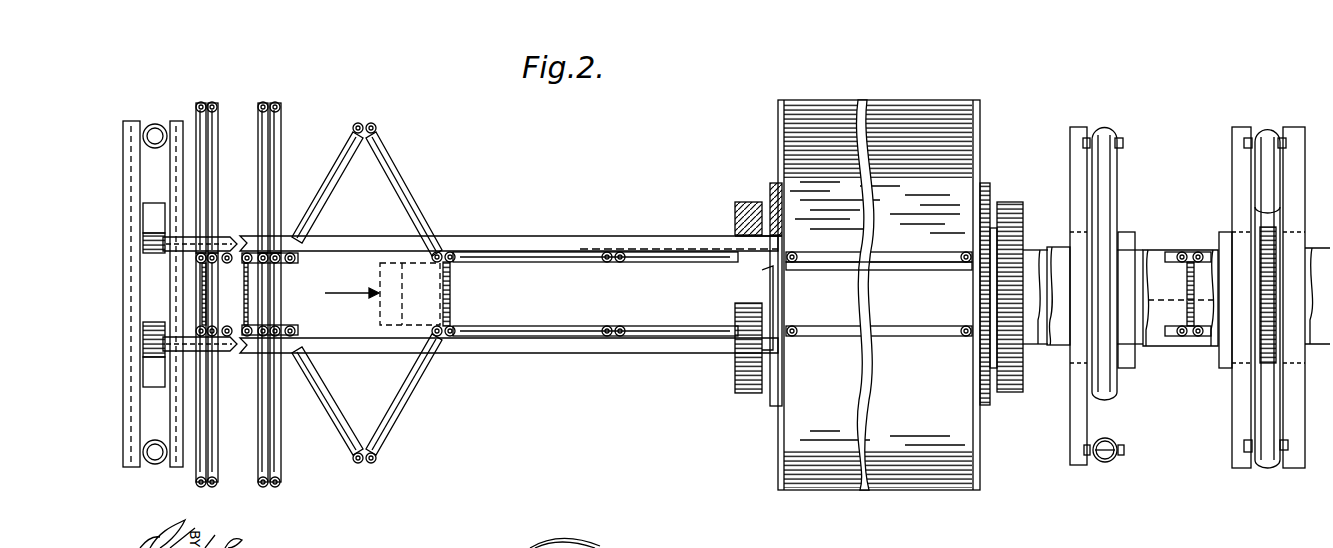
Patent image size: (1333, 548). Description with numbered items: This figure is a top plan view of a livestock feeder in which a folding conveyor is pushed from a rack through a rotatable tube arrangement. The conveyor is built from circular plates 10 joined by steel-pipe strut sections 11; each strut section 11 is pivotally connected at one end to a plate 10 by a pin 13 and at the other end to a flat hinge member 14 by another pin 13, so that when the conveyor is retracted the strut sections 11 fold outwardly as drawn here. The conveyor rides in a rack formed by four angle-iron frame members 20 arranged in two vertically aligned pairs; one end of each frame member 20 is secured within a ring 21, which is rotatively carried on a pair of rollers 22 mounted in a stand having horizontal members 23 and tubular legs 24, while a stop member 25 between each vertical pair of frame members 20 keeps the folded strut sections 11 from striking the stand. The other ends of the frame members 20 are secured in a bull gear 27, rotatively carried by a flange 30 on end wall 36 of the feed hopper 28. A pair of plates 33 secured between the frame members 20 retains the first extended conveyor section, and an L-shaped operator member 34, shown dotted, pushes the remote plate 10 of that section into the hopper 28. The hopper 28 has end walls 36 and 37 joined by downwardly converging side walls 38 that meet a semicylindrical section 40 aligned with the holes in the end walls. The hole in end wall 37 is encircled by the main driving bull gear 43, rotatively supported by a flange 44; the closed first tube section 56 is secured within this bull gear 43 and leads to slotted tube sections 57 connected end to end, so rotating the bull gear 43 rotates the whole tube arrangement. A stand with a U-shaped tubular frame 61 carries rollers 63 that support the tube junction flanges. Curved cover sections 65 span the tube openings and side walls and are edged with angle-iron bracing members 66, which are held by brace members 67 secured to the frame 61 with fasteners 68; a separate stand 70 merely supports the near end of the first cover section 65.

The circular plate 10 is at (451, 293).
The strut section 11 is at (197, 116).
The pin 13 is at (200, 102).
The hinge member 14 is at (263, 103).
The frame member 20 is at (508, 236).
The ring 21 is at (170, 222).
The roller 22 is at (155, 203).
The horizontal member 23 is at (131, 468).
The leg 24 is at (143, 128).
The stop member 25 is at (190, 246).
The bull gear 27 is at (735, 203).
The feed hopper 28 is at (836, 100).
The flange 30 is at (770, 185).
The plate 33 is at (670, 247).
The operator member 34 is at (380, 268).
The end wall 36 is at (778, 116).
The end wall 37 is at (982, 118).
The side wall 38 is at (932, 118).
The semicylindrical section 40 is at (940, 262).
The bull gear 43 is at (1012, 202).
The flange 44 is at (987, 183).
The first tube section 56 is at (1063, 248).
The tube section 57 is at (1152, 346).
The tubular frame 61 is at (1272, 130).
The roller 63 is at (1258, 340).
The cover section 65 is at (1068, 346).
The bracing member 66 is at (1130, 232).
The brace member 67 is at (1079, 126).
The fastener 68 is at (1083, 140).
The stand 70 is at (1106, 128).